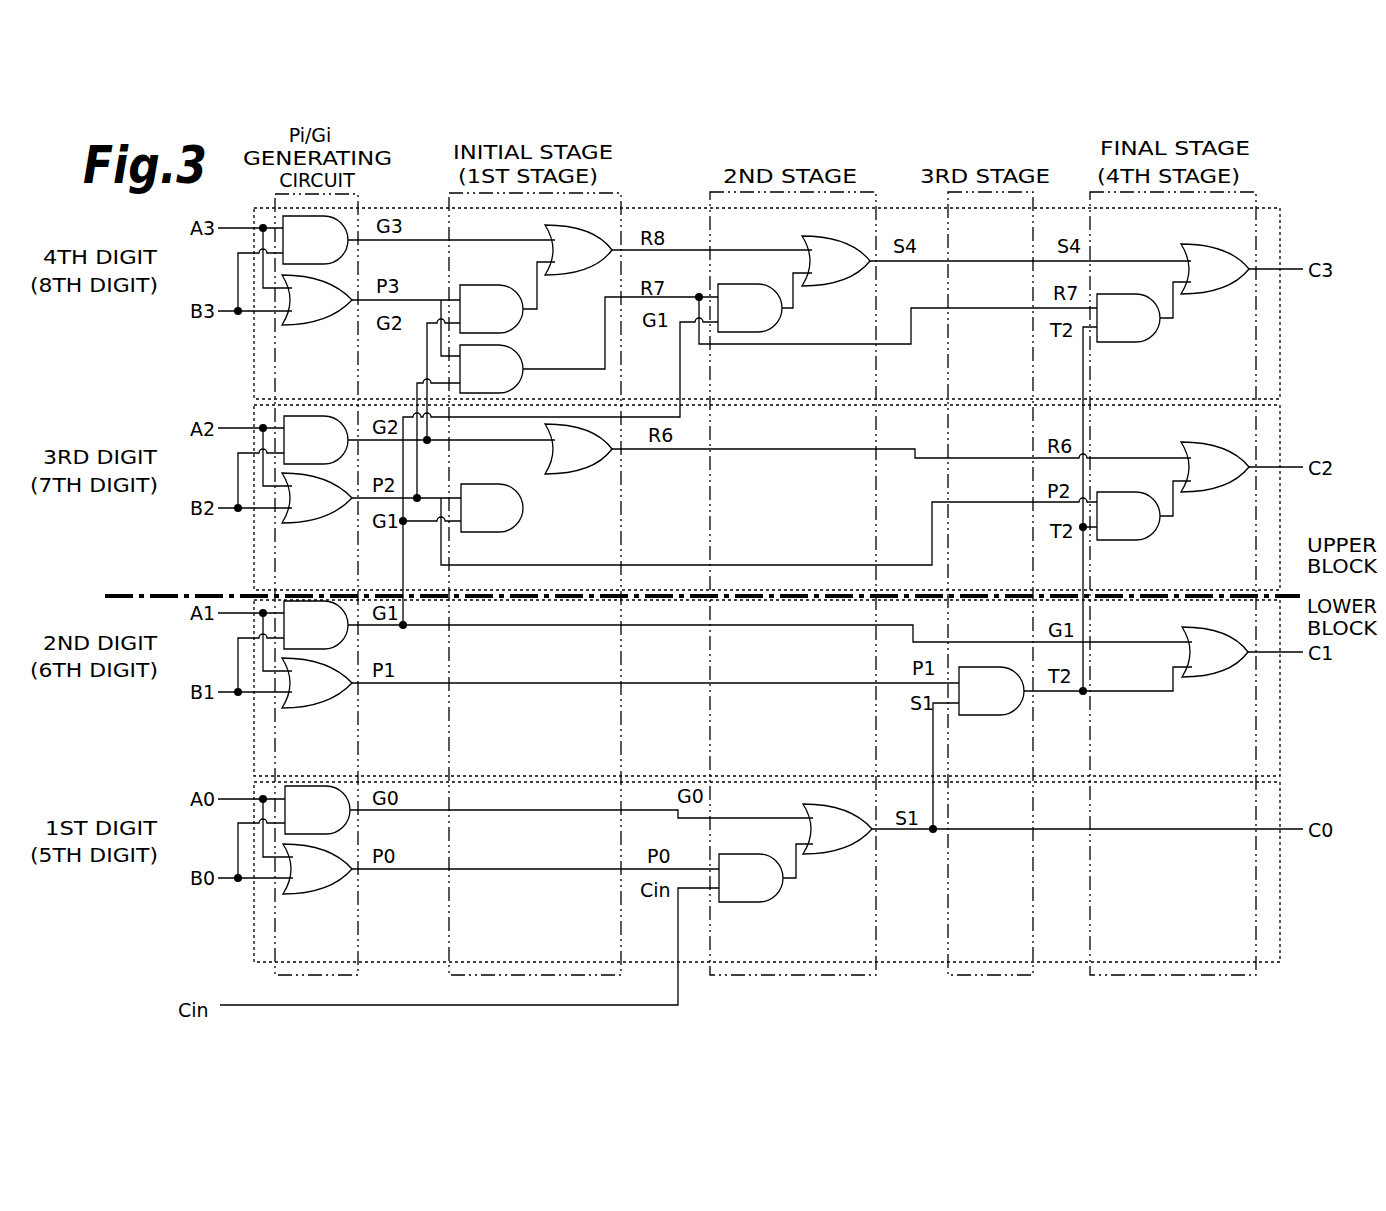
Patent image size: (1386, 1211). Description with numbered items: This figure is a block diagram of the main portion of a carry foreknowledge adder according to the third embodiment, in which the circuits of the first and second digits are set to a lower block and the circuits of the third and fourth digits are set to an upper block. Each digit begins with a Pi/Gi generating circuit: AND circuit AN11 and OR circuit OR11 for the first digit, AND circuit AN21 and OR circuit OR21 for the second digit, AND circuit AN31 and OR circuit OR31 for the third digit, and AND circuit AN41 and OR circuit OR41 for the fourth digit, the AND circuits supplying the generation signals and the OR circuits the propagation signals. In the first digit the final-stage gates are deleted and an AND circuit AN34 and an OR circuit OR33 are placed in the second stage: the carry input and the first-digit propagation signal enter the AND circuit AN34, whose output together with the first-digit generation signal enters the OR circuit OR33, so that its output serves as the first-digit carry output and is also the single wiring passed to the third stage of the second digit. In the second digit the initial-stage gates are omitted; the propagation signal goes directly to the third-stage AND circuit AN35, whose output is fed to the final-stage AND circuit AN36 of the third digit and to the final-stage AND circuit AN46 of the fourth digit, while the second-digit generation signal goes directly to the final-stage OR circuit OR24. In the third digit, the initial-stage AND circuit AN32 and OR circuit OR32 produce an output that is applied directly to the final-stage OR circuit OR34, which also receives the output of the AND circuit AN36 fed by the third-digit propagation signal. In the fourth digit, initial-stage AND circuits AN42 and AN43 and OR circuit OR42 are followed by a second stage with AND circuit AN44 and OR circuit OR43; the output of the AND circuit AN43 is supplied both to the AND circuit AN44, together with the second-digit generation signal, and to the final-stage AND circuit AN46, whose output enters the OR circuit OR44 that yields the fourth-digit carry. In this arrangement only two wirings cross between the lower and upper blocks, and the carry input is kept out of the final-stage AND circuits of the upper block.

The AND gate (4th digit generate) AN41 is at (315, 240).
The OR gate (4th digit propagate) OR41 is at (317, 300).
The AND gate (initial stage) AN42 is at (491, 309).
The AND circuit AN43 is at (491, 369).
The OR gate (initial stage) OR42 is at (578, 250).
The AND circuit AN44 is at (750, 308).
The OR gate (2nd stage) OR43 is at (836, 261).
The AND circuit AN46 is at (1128, 318).
The OR circuit OR44 is at (1215, 269).
The AND gate (3rd digit generate) AN31 is at (316, 440).
The OR gate (3rd digit propagate) OR31 is at (317, 498).
The AND gate (initial stage) AN32 is at (492, 508).
The OR circuit OR32 is at (578, 449).
The AND circuit AN36 is at (1128, 516).
The OR circuit OR34 is at (1215, 467).
The AND gate (2nd digit generate) AN21 is at (316, 625).
The OR gate (2nd digit propagate) OR21 is at (317, 683).
The AND circuit AN35 is at (991, 691).
The OR circuit OR24 is at (1215, 652).
The AND gate (1st digit generate) AN11 is at (317, 810).
The OR gate (1st digit propagate) OR11 is at (317, 869).
The AND circuit AN34 is at (751, 878).
The OR circuit OR33 is at (837, 829).